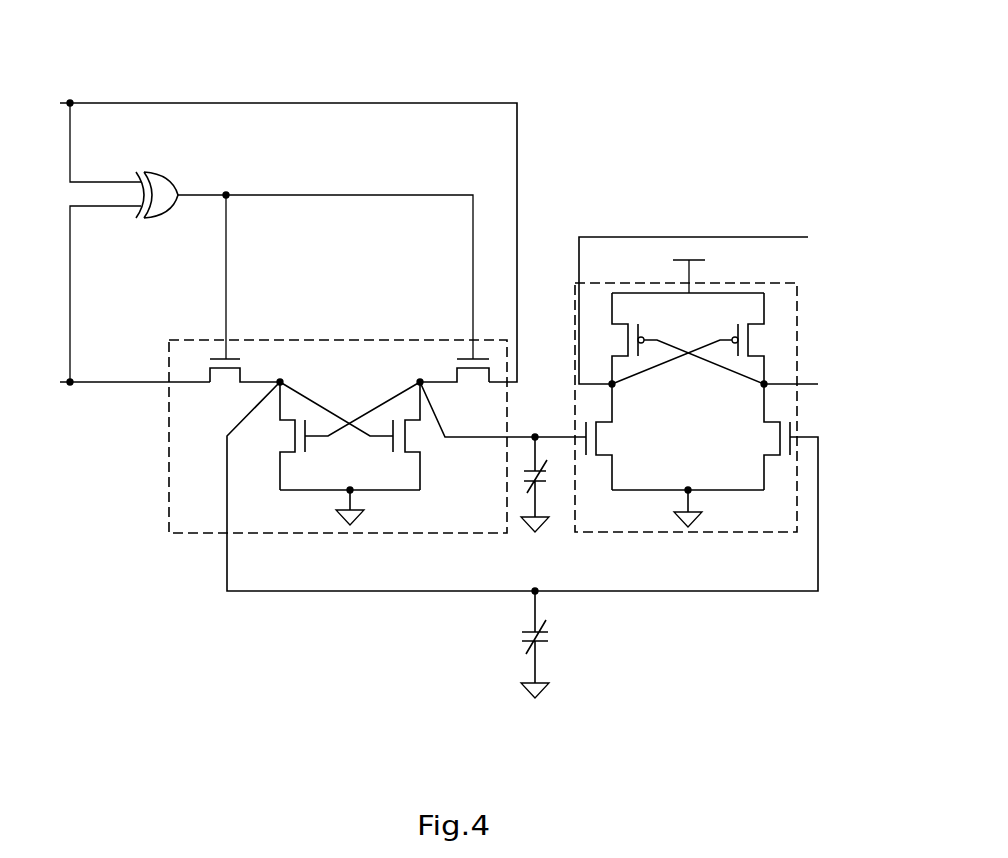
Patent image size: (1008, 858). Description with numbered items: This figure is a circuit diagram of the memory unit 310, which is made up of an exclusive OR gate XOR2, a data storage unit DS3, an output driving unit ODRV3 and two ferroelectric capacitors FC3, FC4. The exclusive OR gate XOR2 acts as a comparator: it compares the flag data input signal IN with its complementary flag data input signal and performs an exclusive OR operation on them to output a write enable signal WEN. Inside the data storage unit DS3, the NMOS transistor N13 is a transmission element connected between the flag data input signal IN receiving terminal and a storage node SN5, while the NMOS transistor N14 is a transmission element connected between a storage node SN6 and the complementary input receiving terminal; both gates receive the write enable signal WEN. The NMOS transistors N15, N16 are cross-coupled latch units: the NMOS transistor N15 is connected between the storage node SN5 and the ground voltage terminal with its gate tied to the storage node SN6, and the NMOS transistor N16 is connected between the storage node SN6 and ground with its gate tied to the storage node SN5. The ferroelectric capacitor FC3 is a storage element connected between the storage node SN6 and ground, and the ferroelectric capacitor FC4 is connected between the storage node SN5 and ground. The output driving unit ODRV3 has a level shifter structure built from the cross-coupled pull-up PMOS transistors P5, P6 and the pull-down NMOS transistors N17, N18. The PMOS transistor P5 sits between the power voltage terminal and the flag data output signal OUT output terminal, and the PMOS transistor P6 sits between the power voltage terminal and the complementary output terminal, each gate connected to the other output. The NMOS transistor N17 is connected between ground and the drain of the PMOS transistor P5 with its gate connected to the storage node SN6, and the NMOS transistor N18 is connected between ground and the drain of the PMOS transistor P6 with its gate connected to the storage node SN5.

The memory unit 310 is at (645, 54).
The flag data input signal IN is at (135, 308).
The exclusive OR gate XOR2 is at (156, 180).
The write enable signal WEN is at (325, 264).
The data storage unit DS3 is at (398, 340).
The NMOS transistor N13 is at (245, 383).
The NMOS transistor N14 is at (456, 384).
The NMOS transistor N15 is at (336, 436).
The NMOS transistor N16 is at (361, 436).
The storage node SN5 is at (522, 488).
The storage node SN6 is at (503, 411).
The ferroelectric capacitor FC3 is at (549, 484).
The ferroelectric capacitor FC4 is at (555, 644).
The output driving unit ODRV3 is at (797, 297).
The PMOS transistor P5 is at (681, 338).
The PMOS transistor P6 is at (695, 338).
The NMOS transistor N17 is at (611, 437).
The NMOS transistor N18 is at (766, 437).
The flag data output signal OUT is at (695, 298).